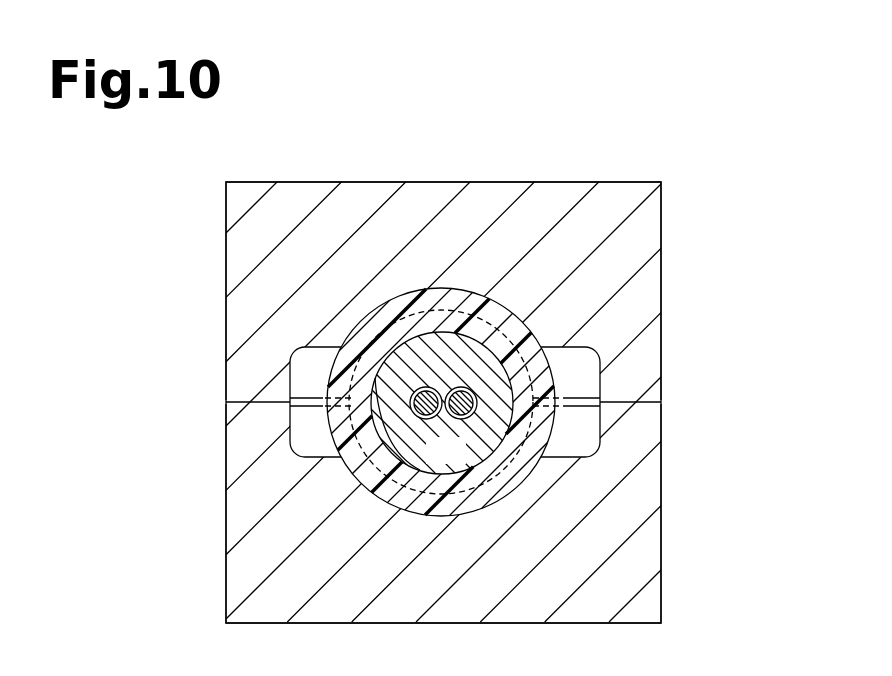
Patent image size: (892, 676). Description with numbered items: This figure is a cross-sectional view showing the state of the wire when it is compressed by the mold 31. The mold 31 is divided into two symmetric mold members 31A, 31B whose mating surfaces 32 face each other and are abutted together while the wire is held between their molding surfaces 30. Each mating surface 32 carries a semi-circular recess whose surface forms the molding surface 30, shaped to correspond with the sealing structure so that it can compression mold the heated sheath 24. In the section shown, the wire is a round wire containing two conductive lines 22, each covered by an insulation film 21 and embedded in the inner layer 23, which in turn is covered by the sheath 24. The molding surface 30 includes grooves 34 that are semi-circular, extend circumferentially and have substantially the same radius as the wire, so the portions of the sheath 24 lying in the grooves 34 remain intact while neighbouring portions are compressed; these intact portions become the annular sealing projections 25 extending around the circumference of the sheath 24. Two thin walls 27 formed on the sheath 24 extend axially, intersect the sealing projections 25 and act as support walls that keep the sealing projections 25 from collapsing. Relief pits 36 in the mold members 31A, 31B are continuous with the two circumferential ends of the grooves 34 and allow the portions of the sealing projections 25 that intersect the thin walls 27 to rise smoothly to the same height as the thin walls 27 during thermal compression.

The insulation film 21 is at (407, 385).
The conductive lines 22 is at (441, 420).
The inner layer 23 is at (376, 488).
The sheath 24 is at (423, 318).
The sealing projections 25 is at (447, 513).
The thin walls 27 is at (565, 407).
The molding surface 30 is at (513, 323).
The mold 31 is at (766, 360).
The mold member 31A is at (670, 452).
The mold member 31B is at (670, 373).
The mating surfaces 32 is at (226, 401).
The grooves 34 is at (516, 480).
The relief pits 36 is at (580, 351).